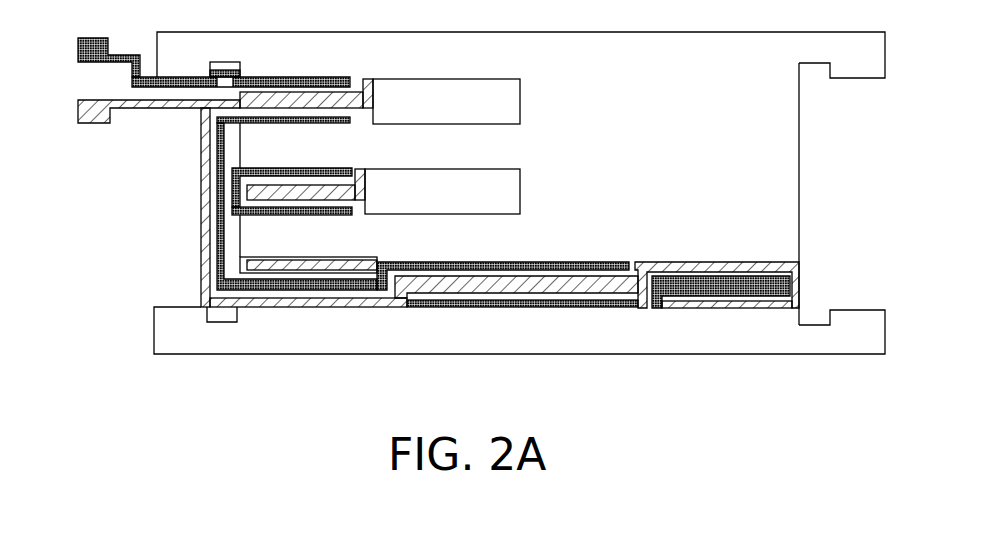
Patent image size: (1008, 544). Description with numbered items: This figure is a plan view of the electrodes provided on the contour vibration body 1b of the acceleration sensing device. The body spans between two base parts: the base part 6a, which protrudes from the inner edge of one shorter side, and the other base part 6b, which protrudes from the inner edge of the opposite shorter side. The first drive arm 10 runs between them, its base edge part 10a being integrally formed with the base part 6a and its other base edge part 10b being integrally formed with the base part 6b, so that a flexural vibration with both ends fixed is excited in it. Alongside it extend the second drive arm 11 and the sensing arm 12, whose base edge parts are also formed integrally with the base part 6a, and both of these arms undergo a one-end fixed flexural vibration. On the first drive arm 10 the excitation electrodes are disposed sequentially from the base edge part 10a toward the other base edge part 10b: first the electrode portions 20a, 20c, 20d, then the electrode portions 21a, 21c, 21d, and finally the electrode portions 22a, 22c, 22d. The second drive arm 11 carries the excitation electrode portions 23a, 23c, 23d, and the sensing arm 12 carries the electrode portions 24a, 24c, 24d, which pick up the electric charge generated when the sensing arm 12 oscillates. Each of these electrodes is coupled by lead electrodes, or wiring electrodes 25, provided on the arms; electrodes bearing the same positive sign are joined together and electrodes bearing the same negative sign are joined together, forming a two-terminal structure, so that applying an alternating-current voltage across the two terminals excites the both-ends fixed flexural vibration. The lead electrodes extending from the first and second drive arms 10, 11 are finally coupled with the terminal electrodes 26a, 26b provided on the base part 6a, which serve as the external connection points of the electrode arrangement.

The piezoelectric vibrating reed 1b is at (632, 125).
The base part 6a is at (156, 232).
The base part 6b is at (822, 178).
The first drive arm 10 is at (637, 250).
The base edge part 10a is at (195, 278).
The other base edge part 10b is at (803, 285).
The second drive arm 11 is at (515, 105).
The sensing arm 12 is at (515, 193).
The excitation electrode 20a is at (311, 285).
The excitation electrode 20c is at (273, 258).
The excitation electrode 20d is at (263, 307).
The excitation electrode 21a is at (452, 285).
The excitation electrode 21c is at (497, 262).
The excitation electrode 21d is at (570, 307).
The excitation electrode 22a is at (675, 285).
The excitation electrode 22c is at (707, 267).
The excitation electrode 22d is at (738, 303).
The excitation electrode 23a is at (377, 93).
The excitation electrode 23c is at (307, 80).
The excitation electrode 23d is at (267, 118).
The electrode 24a is at (367, 172).
The electrode 24c is at (322, 168).
The electrode 24d is at (320, 212).
The wiring electrode 25 is at (173, 78).
The terminal electrode 26a is at (90, 115).
The terminal electrode 26b is at (97, 37).